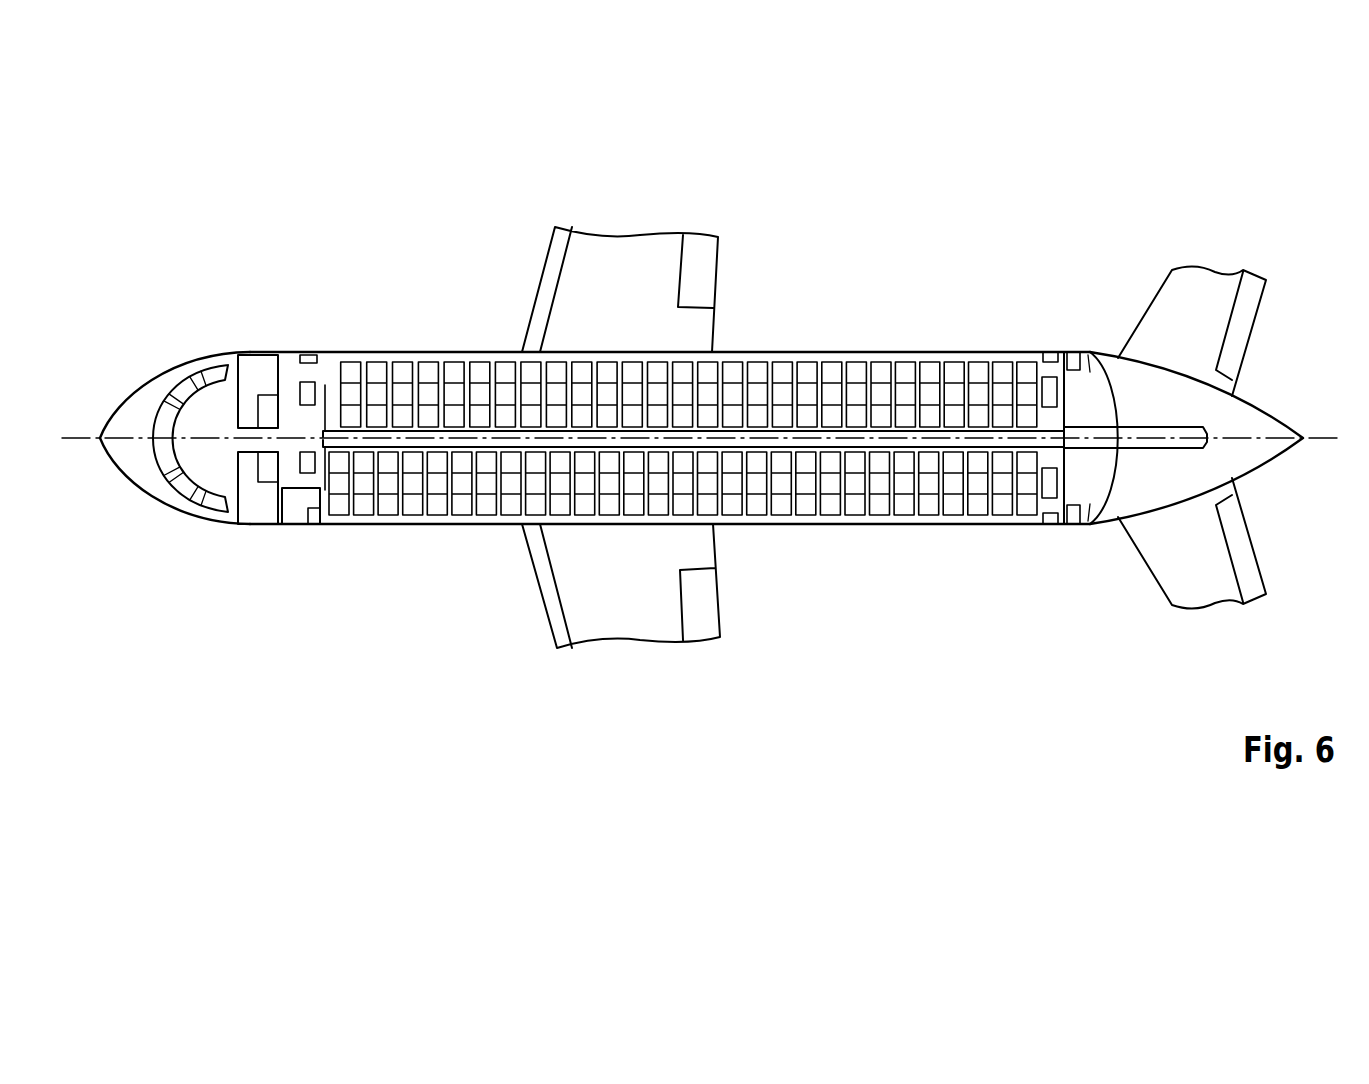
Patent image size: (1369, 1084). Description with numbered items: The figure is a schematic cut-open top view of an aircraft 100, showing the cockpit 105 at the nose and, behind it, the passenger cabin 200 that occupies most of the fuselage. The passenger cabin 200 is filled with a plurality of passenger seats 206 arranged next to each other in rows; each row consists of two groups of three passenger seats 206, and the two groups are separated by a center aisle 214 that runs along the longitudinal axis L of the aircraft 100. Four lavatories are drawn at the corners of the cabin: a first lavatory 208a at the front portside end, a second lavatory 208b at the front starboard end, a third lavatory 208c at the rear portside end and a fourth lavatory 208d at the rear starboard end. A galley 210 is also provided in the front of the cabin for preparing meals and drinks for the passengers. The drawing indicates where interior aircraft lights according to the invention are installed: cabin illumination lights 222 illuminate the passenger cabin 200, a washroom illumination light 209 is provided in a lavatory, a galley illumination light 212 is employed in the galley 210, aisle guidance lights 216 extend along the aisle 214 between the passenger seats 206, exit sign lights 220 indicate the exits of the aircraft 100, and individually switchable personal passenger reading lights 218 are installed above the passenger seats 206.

The aircraft 100 is at (150, 330).
The cockpit 105 is at (138, 533).
The longitudinal axis L is at (72, 448).
The passenger cabin 200 is at (384, 632).
The passenger seats 206 is at (910, 348).
The first lavatory 208a is at (257, 502).
The second lavatory 208b is at (258, 365).
The third lavatory 208c is at (1088, 505).
The fourth lavatory 208d is at (1088, 370).
The washroom illumination light 209 is at (268, 415).
The galley 210 is at (302, 508).
The galley illumination light 212 is at (318, 508).
The center aisle 214 is at (1047, 431).
The aisle guidance lights 216 is at (325, 431).
The personal passenger reading lights 218 is at (905, 392).
The exit sign lights 220 is at (308, 360).
The cabin illumination lights 222 is at (310, 395).